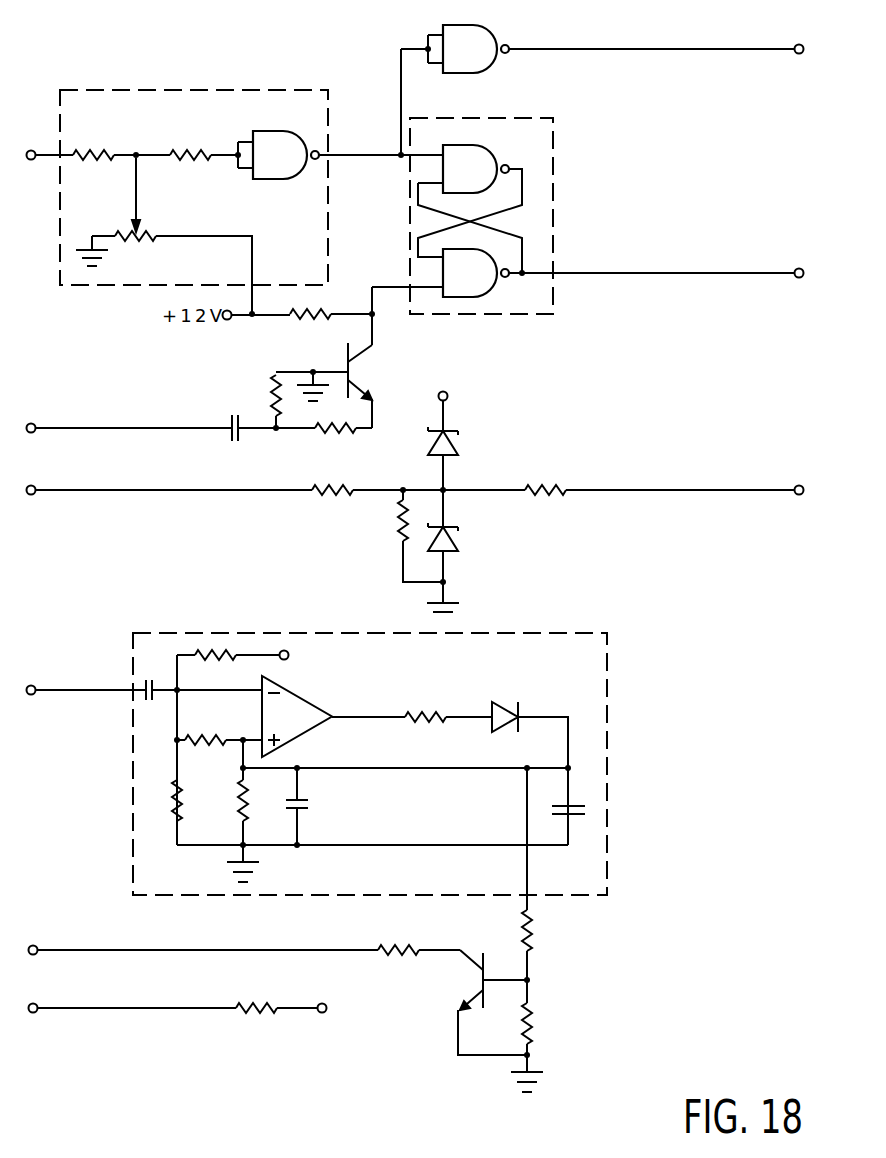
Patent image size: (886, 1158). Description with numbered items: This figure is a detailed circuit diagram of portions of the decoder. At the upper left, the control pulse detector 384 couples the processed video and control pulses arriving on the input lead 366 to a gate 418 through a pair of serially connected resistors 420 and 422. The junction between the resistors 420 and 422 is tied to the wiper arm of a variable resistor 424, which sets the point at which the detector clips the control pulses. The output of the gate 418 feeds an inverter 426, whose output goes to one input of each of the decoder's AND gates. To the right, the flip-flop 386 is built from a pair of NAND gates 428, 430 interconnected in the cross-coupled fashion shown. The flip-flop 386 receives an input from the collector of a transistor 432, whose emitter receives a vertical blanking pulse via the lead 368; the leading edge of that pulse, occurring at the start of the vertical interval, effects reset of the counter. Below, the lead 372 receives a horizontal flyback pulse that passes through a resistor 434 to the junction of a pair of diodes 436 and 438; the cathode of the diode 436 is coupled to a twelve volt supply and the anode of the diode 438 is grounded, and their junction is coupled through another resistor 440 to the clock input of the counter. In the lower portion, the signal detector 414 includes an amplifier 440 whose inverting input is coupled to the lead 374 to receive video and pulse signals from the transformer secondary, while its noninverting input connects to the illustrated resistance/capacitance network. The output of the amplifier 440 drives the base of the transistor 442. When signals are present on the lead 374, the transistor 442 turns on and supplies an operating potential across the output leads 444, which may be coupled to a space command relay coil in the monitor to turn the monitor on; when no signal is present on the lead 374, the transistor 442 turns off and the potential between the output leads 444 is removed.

The input lead 366 is at (31, 150).
The control pulse detector 384 is at (254, 90).
The resistor 420 is at (111, 158).
The resistor 422 is at (206, 159).
The gate 418 is at (293, 179).
The variable resistor 424 is at (125, 233).
The inverter 426 is at (497, 28).
The flip-flop 386 is at (554, 150).
The NAND gate 428 is at (493, 147).
The NAND gate 430 is at (488, 296).
The transistor 432 is at (346, 362).
The lead 368 is at (192, 428).
The lead 372 is at (155, 492).
The resistor 434 is at (338, 488).
The diode 436 is at (462, 445).
The diode 438 is at (462, 543).
The resistor / amplifier 440 is at (550, 488).
The lead 374 is at (92, 688).
The signal detector 414 is at (130, 833).
The transistor 442 is at (480, 977).
The output leads 444 is at (38, 948).